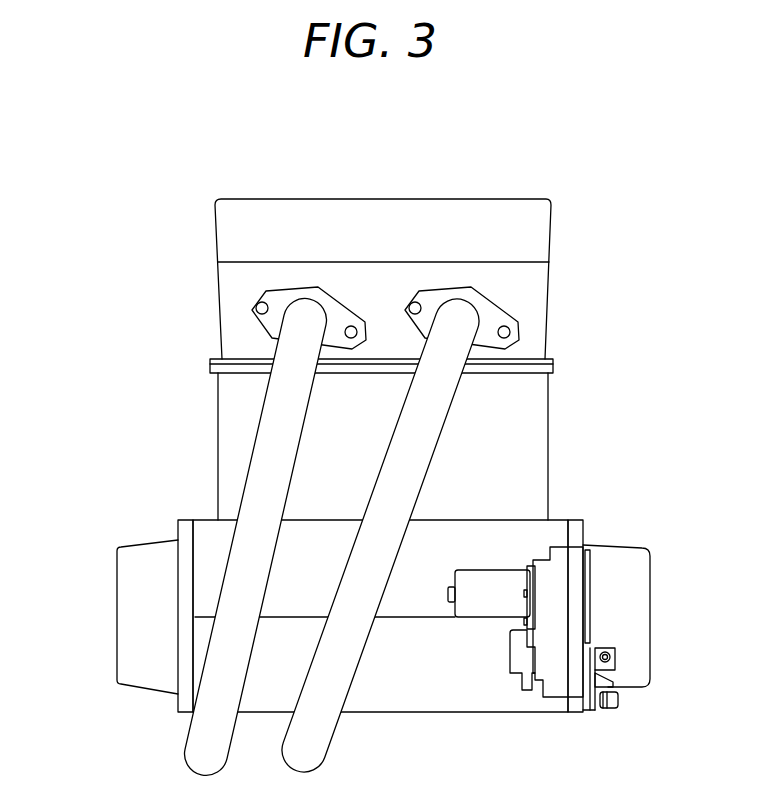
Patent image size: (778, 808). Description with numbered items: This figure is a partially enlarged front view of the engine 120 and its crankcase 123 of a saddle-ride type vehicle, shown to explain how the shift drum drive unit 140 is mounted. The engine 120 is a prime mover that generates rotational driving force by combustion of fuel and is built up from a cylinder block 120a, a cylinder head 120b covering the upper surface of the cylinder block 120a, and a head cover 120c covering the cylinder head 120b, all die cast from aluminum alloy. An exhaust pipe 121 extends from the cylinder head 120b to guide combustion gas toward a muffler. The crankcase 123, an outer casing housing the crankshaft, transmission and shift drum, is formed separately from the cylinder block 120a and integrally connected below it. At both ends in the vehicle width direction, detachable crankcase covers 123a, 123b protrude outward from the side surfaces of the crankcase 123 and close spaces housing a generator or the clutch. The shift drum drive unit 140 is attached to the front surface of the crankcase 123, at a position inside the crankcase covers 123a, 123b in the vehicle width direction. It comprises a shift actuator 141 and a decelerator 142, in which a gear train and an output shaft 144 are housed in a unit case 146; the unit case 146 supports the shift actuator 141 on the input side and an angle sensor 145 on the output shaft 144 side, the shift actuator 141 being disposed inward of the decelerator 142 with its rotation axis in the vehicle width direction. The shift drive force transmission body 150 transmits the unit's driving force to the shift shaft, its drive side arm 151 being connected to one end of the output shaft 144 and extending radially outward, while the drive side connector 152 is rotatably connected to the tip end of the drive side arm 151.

The engine 120 is at (359, 338).
The cylinder block 120a is at (218, 403).
The cylinder head 120b is at (218, 306).
The head cover 120c is at (216, 242).
The exhaust pipe 121 is at (253, 453).
The crankcase 123 is at (382, 589).
The crankcase cover 123a is at (650, 548).
The crankcase cover 123b is at (119, 546).
The shift drum drive unit 140 is at (573, 628).
The shift actuator 141 is at (477, 570).
The decelerator 142 is at (588, 590).
The output shaft 144 is at (612, 665).
The angle sensor 145 is at (510, 664).
The unit case 146 is at (548, 560).
The shift drive force transmission body 150 is at (614, 647).
The drive side arm 151 is at (615, 684).
The drive side connector 152 is at (608, 710).